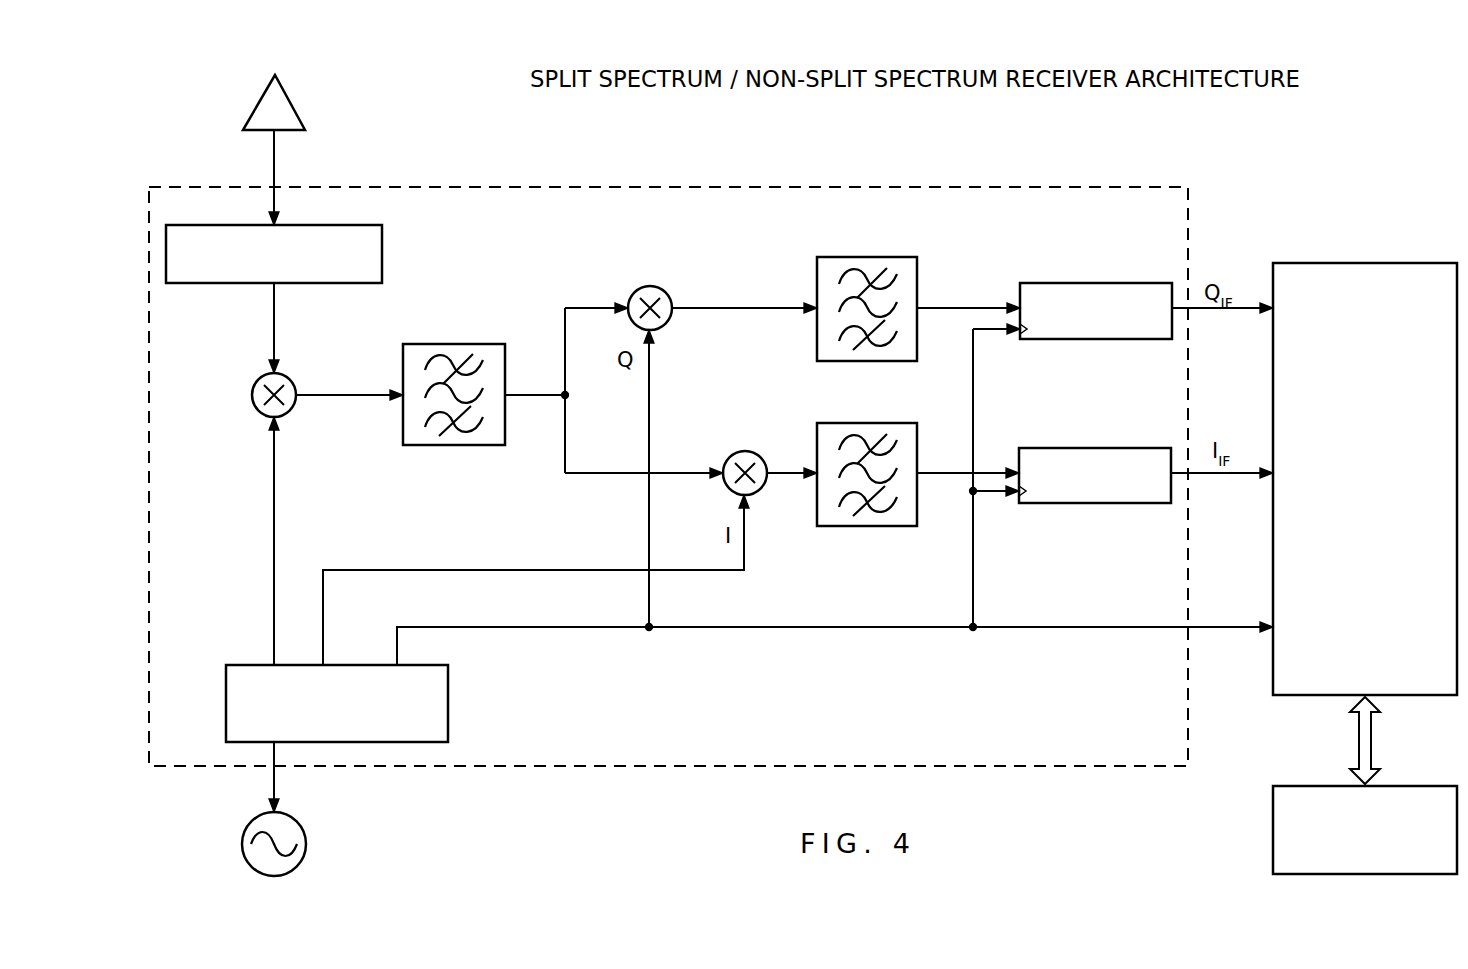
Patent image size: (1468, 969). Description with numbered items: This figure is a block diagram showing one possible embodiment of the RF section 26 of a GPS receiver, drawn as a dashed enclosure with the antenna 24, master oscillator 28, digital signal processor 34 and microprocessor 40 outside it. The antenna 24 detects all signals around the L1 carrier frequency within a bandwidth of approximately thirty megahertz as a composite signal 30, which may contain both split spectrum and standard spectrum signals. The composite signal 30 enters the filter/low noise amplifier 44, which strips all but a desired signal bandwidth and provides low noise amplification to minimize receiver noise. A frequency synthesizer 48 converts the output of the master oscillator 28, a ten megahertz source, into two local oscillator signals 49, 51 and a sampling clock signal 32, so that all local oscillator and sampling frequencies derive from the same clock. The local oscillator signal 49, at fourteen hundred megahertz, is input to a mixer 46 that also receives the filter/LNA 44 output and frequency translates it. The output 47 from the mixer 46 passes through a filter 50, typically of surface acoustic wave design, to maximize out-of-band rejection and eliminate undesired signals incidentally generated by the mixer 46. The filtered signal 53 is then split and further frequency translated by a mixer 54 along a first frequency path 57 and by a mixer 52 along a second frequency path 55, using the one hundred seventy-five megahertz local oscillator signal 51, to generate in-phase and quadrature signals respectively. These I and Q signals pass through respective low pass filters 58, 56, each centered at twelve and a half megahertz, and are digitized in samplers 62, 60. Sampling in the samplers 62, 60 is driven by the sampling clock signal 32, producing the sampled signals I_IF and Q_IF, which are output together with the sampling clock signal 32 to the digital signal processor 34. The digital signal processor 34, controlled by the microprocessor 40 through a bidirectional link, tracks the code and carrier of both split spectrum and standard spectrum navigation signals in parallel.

The antenna 24 is at (290, 97).
The composite signal 30 is at (278, 155).
The filter/low noise amplifier 44 is at (383, 247).
The mixer 46 is at (254, 406).
The output 47 is at (320, 392).
The local oscillator signal 49 is at (276, 548).
The filter 50 is at (507, 425).
The local oscillator signal 51 is at (324, 650).
The mixer 52 is at (665, 290).
The filtered signal 53 is at (527, 393).
The mixer 54 is at (732, 454).
The second frequency path 55 is at (715, 306).
The low pass filter 56 is at (918, 290).
The first frequency path 57 is at (783, 476).
The low pass filter 58 is at (918, 458).
The sampler 60 is at (1065, 283).
The sampler 62 is at (1065, 448).
The digital signal processor 34 is at (1338, 263).
The microprocessor 40 is at (1318, 786).
The frequency synthesizer 48 is at (448, 692).
The master oscillator 28 is at (243, 836).
The RF section 26 is at (568, 768).
The sampling clock signal 32 is at (720, 629).